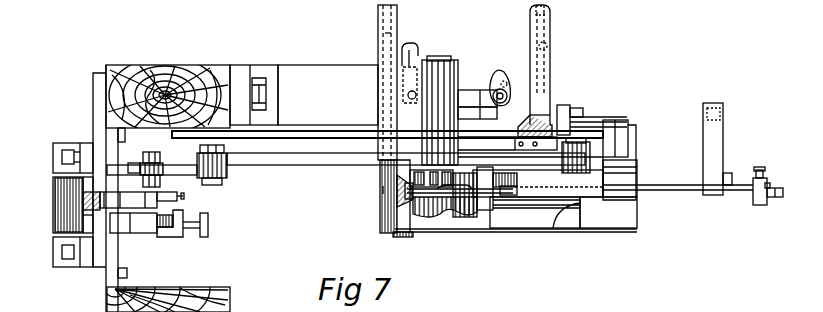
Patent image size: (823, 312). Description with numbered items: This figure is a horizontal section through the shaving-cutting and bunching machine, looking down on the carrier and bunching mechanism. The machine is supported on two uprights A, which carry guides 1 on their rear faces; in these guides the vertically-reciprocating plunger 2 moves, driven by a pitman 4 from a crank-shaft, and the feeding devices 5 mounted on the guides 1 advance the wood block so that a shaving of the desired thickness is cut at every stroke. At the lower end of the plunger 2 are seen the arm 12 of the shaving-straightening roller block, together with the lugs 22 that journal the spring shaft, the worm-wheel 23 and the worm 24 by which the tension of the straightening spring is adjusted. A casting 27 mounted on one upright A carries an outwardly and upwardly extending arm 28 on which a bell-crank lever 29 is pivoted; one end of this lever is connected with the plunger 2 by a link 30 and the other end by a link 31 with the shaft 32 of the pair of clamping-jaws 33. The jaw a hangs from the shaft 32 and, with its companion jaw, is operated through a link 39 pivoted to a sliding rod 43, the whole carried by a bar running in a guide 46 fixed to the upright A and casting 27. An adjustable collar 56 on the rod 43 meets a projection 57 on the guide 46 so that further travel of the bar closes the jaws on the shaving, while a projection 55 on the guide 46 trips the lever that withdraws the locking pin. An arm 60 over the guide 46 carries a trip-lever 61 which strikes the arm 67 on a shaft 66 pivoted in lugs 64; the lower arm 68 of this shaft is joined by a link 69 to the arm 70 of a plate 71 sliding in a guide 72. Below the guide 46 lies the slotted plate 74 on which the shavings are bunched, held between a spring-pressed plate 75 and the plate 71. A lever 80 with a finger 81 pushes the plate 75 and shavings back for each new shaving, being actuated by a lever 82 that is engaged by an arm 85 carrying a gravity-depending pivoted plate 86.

The guides 1 is at (68, 153).
The plunger 2 is at (100, 236).
The pitman 4 is at (83, 198).
The feeding devices 5 is at (53, 208).
The arm 12 is at (383, 190).
The lugs 22 is at (180, 238).
The worm-wheel 23 is at (160, 235).
The worm 24 is at (208, 228).
The casting 27 is at (236, 70).
The arm 28 is at (328, 95).
The bell-crank lever 29 is at (283, 165).
The link 30 is at (183, 172).
The link 31 is at (552, 165).
The shaft 32 is at (412, 180).
The clamping-jaws 33 is at (424, 221).
The link 39 is at (455, 218).
The rod 43 is at (663, 186).
The guide 46 is at (335, 131).
The projection 55 is at (620, 158).
The adjustable collar 56 is at (763, 198).
The projection 57 is at (500, 210).
The arm 60 is at (550, 21).
The trip-lever 61 is at (556, 90).
The lugs 64 is at (502, 105).
The shaft 66 is at (494, 80).
The arm 67 is at (517, 66).
The arm 68 is at (470, 90).
The link 69 is at (428, 60).
The arm 70 is at (407, 46).
The plate 71 is at (385, 33).
The guide 72 is at (378, 13).
The slotted plate 74 is at (637, 231).
The plate 75 is at (585, 215).
The lever 80 is at (405, 238).
The finger 81 is at (408, 204).
The lever 82 is at (575, 110).
The arm 85 is at (723, 141).
The plate 86 is at (707, 112).
The uprights A is at (241, 300).
The jaw a is at (398, 200).